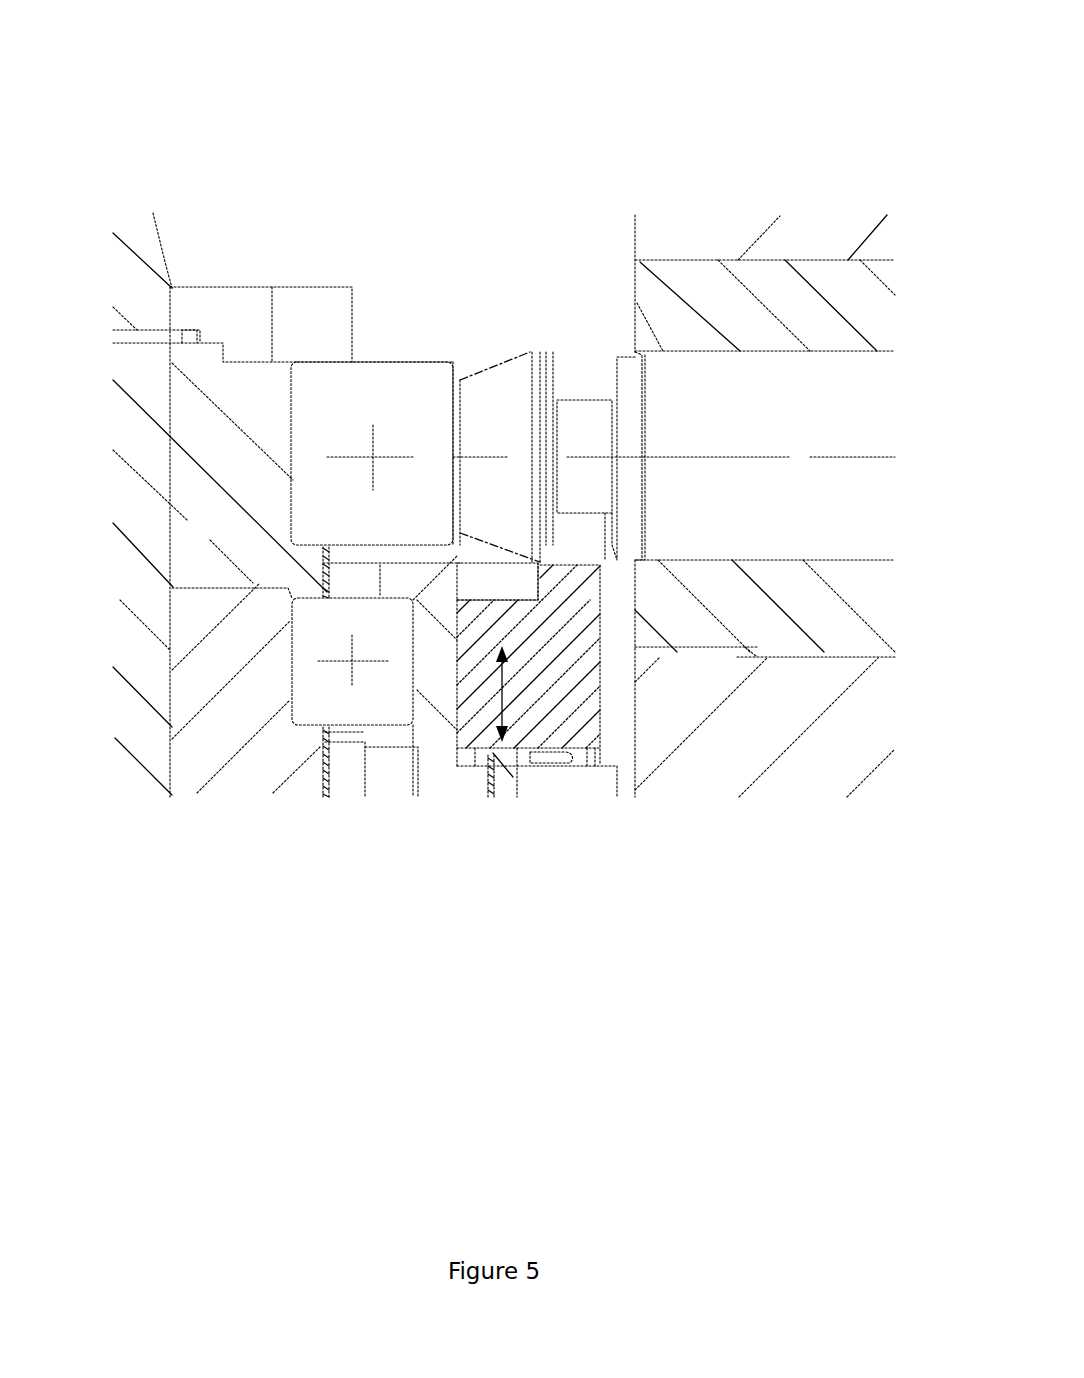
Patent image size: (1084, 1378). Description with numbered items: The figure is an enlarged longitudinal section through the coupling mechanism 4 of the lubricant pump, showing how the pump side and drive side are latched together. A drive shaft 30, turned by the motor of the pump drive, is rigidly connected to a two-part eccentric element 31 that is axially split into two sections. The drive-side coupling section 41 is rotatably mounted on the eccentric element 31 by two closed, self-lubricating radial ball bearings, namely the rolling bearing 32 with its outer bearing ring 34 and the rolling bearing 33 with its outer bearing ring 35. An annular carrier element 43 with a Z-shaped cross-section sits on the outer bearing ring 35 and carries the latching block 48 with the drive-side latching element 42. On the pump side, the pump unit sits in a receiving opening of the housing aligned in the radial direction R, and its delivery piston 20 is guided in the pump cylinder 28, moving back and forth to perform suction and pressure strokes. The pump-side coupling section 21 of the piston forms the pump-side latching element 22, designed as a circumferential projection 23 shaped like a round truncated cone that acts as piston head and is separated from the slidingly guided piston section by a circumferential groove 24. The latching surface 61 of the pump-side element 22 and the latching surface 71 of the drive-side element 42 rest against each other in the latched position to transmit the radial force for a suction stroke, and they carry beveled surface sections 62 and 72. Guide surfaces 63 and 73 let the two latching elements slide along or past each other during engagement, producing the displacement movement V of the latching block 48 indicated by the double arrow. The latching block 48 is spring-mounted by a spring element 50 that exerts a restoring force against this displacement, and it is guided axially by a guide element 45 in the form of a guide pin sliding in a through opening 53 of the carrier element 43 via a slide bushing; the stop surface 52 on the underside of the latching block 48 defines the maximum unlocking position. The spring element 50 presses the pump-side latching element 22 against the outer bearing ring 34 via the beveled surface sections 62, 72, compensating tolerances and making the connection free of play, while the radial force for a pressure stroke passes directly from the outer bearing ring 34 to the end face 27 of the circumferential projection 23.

The coupling mechanism 4 is at (291, 112).
The pump-side coupling section 21 is at (478, 86).
The pump-side latching element 22 is at (427, 322).
The circumferential projection 23 is at (512, 372).
The circumferential groove 24 is at (658, 350).
The guide surface 73 is at (677, 470).
The delivery piston 20 is at (777, 397).
The latching surface 61 is at (587, 358).
The beveled surface section 62 is at (585, 372).
The outer bearing ring 34 is at (311, 295).
The end face 27 is at (253, 505).
The rolling bearing 32 is at (320, 405).
The guide surface 63 is at (453, 542).
The latching surface 71 is at (540, 582).
The eccentric element 31 is at (207, 660).
The rolling bearing 33 is at (295, 709).
The drive shaft 30 is at (153, 755).
The outer bearing ring 35 is at (410, 682).
The carrier element 43 is at (432, 730).
The displacement V is at (501, 683).
The through opening 53 is at (490, 770).
The guide element 45 is at (507, 773).
The spring element 50 is at (548, 755).
The stop surface 52 is at (588, 757).
The beveled surface section 72 is at (543, 547).
The drive-side latching element 42 is at (600, 750).
The latching block 48 is at (567, 708).
The radial direction R is at (872, 457).
The pump cylinder 28 is at (845, 582).
The drive-side coupling section 41 is at (414, 992).